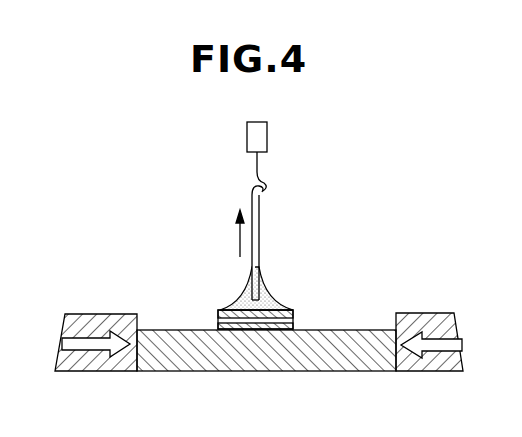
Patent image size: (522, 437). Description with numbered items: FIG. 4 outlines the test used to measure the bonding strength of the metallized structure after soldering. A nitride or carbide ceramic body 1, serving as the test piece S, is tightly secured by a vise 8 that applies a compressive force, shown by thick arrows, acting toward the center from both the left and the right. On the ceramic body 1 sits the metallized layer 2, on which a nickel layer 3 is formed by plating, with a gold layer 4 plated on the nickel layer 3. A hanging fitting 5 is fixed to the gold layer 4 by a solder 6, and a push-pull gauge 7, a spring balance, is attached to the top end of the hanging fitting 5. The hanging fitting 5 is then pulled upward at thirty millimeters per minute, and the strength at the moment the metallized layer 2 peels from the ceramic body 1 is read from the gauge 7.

The ceramic substrate 1 is at (205, 358).
The metallized layer 2 is at (283, 326).
The nickel layer 3 is at (296, 322).
The gold layer 4 is at (218, 313).
The hanging fitting 5 is at (260, 243).
The solder 6 is at (270, 303).
The push-pull gauge 7 is at (247, 138).
The vise 8 is at (97, 372).